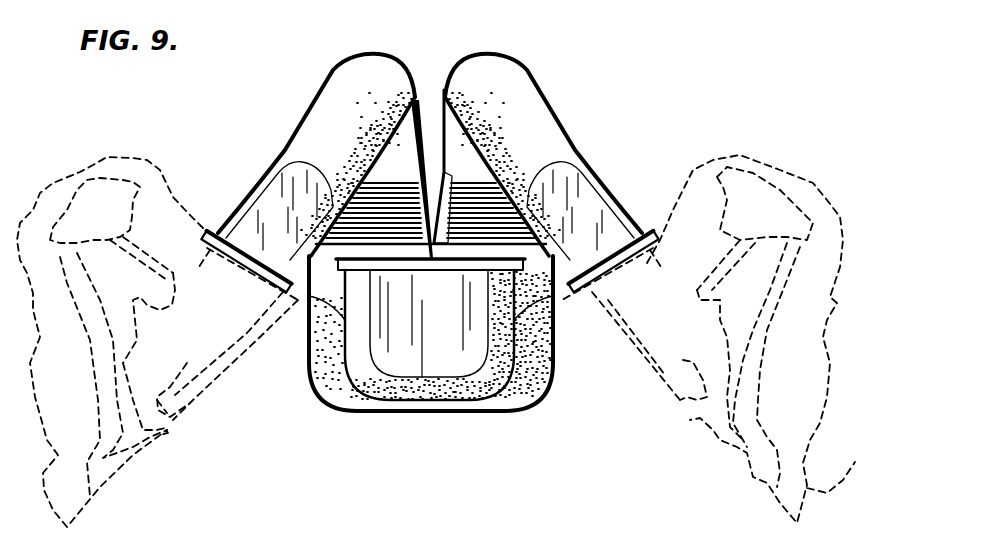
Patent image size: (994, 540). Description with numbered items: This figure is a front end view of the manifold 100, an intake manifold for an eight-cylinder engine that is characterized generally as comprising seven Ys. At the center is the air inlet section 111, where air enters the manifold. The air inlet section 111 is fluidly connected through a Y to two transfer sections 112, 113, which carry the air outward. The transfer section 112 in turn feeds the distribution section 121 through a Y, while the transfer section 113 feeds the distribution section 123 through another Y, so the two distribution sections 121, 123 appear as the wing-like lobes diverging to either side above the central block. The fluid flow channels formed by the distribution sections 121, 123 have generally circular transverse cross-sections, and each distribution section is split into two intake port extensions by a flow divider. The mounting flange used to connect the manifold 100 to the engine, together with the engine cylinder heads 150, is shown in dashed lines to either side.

The manifold 100 is at (429, 243).
The air inlet section 111 is at (421, 387).
The transfer section 112 is at (535, 388).
The transfer section 113 is at (332, 366).
The distribution section 121 is at (544, 140).
The distribution section 123 is at (337, 102).
The mounting structure (phantom) 150 is at (439, 341).